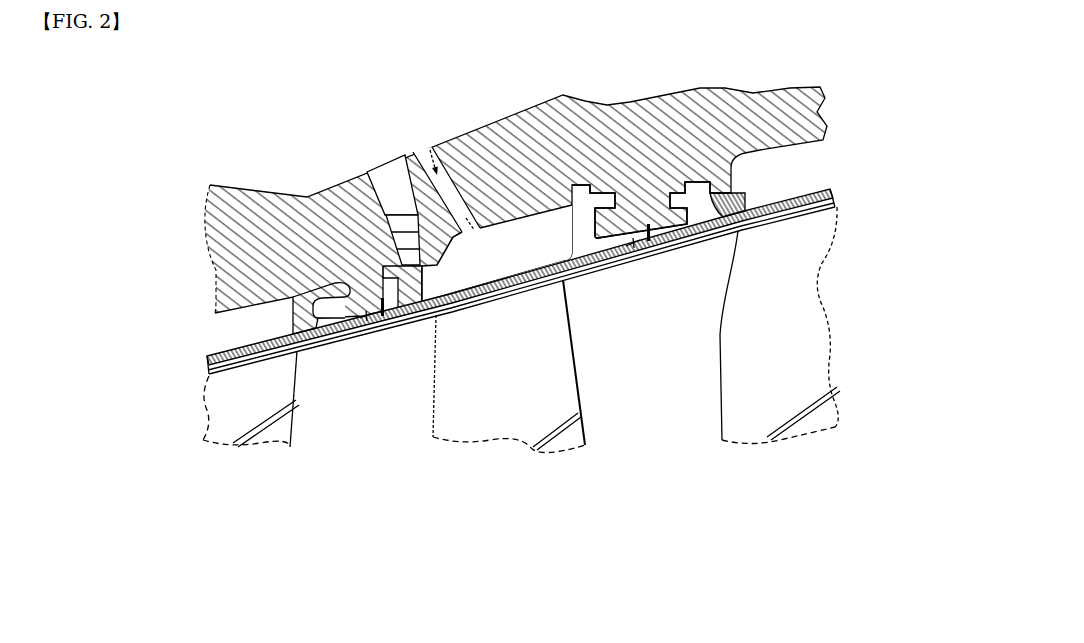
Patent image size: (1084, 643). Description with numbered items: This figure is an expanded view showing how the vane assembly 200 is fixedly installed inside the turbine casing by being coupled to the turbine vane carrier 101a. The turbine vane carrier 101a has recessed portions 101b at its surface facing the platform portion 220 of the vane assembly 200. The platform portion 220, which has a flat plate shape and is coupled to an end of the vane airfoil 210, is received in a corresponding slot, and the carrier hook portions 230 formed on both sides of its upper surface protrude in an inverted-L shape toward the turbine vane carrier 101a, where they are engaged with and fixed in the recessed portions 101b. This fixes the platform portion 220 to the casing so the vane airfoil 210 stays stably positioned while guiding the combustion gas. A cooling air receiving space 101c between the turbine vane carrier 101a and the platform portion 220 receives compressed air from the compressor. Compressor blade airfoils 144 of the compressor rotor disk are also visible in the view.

The turbine vane carrier 101a is at (742, 95).
The recessed portions 101b is at (365, 275).
The cooling air receiving space 101c is at (512, 240).
The compressor blade airfoils 144 is at (215, 402).
The vane assembly 200 is at (578, 351).
The vane airfoil 210 is at (492, 427).
The platform portion 220 is at (528, 275).
The carrier hook portions 230 is at (392, 262).